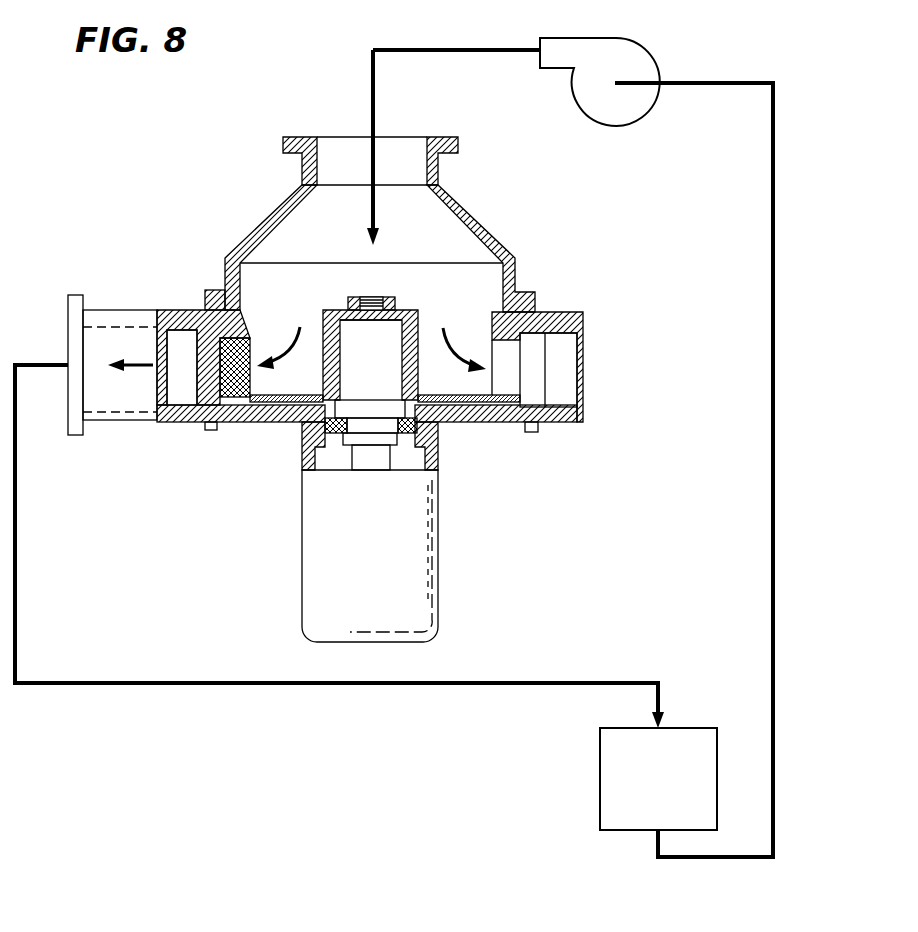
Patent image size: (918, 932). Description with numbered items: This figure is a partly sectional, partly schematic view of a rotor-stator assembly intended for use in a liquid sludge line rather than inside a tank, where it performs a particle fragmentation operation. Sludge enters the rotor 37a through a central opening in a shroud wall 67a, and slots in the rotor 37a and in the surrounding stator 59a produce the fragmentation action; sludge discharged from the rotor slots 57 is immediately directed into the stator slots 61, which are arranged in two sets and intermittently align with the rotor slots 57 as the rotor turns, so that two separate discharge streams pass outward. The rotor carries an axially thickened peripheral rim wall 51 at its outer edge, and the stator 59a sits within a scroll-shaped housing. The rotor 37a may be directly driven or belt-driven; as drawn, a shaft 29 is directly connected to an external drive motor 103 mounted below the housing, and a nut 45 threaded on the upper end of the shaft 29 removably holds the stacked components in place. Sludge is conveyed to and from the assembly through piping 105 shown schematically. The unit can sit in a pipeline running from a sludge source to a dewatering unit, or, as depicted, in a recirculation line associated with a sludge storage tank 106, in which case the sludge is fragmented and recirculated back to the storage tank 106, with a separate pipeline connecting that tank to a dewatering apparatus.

The shaft 29 is at (393, 332).
The rotor 37a is at (277, 410).
The nut 45 is at (392, 297).
The rim wall 51 is at (260, 345).
The rotor slots 57 is at (503, 380).
The stator 59a is at (170, 413).
The stator slots 61 is at (535, 343).
The shroud wall 67a is at (183, 318).
The external drive motor 103 is at (438, 530).
The conduit 105 is at (122, 310).
The sludge storage tank 106 is at (600, 755).